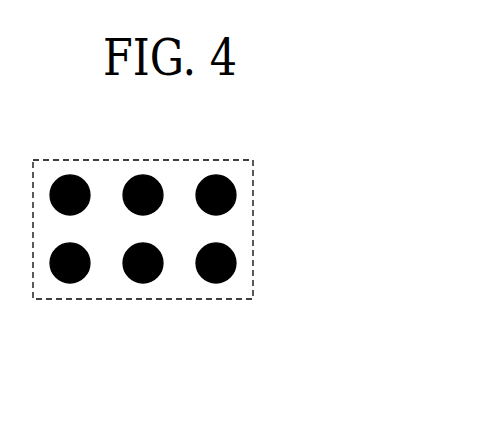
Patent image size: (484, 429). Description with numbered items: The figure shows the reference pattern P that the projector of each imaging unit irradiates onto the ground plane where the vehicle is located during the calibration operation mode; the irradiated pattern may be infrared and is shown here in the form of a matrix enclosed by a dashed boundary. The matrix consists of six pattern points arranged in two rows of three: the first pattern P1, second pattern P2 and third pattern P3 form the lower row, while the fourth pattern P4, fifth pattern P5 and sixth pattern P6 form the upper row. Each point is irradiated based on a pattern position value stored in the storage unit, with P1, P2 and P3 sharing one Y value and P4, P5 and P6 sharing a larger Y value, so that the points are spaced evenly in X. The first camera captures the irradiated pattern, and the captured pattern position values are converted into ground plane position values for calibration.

The reference pattern P is at (253, 230).
The first pattern P1 is at (70, 283).
The second pattern P2 is at (143, 283).
The third pattern P3 is at (216, 283).
The fourth pattern P4 is at (68, 176).
The fifth pattern P5 is at (141, 176).
The sixth pattern P6 is at (214, 176).